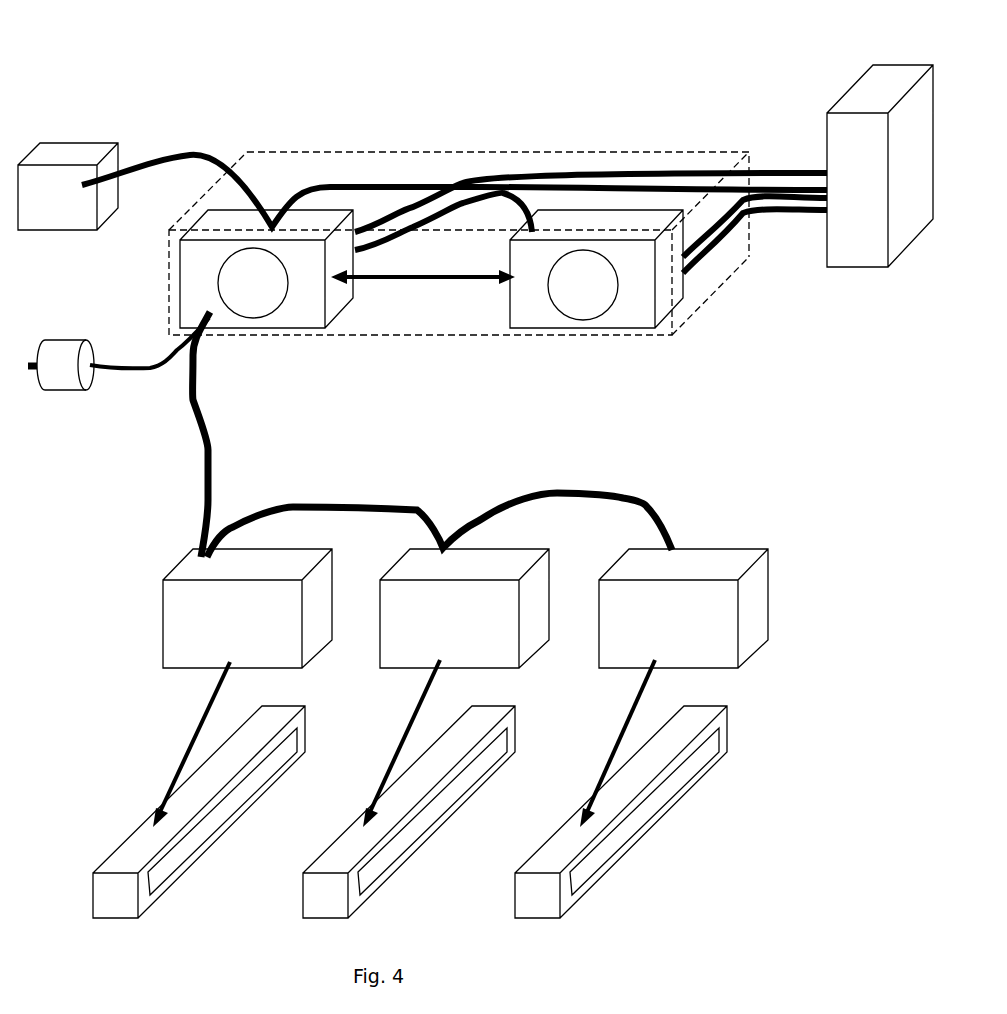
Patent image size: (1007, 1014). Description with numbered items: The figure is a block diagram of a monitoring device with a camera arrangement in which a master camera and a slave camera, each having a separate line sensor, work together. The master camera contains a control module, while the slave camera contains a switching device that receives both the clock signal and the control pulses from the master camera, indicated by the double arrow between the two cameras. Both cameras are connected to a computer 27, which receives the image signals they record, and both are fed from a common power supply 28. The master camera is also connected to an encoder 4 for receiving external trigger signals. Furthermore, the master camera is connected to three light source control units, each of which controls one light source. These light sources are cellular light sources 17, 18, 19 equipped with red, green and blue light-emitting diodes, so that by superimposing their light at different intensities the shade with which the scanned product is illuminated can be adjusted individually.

The encoder 4 is at (63, 357).
The light source 17 is at (130, 840).
The light source 18 is at (348, 840).
The light source 19 is at (567, 842).
The computer 27 is at (868, 98).
The power supply 28 is at (68, 150).